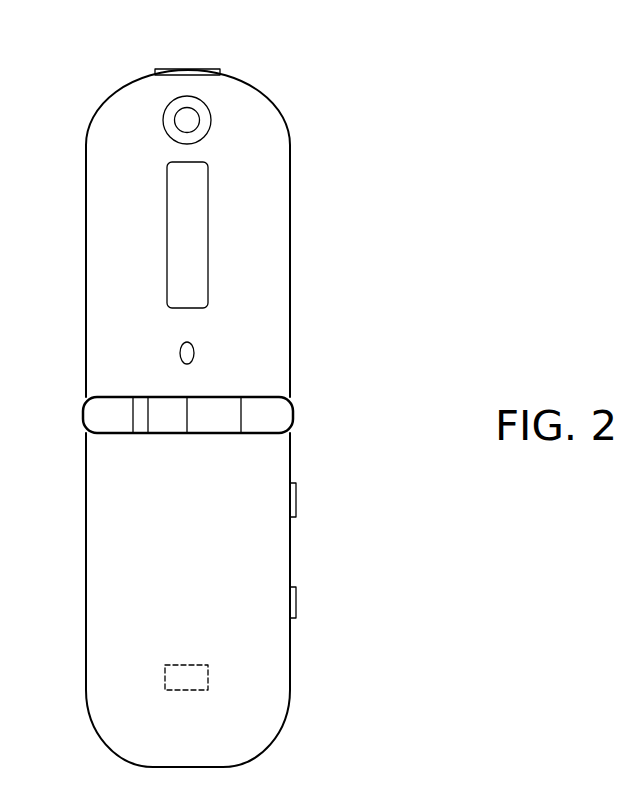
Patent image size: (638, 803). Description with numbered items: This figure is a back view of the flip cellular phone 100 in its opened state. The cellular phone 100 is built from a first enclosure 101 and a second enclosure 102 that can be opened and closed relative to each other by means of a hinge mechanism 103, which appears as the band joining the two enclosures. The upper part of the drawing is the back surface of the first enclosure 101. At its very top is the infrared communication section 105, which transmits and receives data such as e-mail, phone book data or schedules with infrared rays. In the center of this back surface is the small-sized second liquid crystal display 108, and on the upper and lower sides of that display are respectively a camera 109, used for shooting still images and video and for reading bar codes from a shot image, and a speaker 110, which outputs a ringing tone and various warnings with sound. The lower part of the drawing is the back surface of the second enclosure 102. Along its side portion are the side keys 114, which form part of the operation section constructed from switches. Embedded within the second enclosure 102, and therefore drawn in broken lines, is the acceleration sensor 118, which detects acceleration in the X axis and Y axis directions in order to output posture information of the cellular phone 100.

The cellular phone 100 is at (290, 72).
The first enclosure 101 is at (291, 220).
The second enclosure 102 is at (85, 541).
The hinge mechanism 103 is at (292, 412).
The infrared communication section 105 is at (190, 68).
The second liquid crystal display 108 is at (176, 248).
The camera 109 is at (196, 122).
The speaker 110 is at (195, 352).
The side keys 114 is at (297, 498).
The acceleration sensor 118 is at (195, 663).